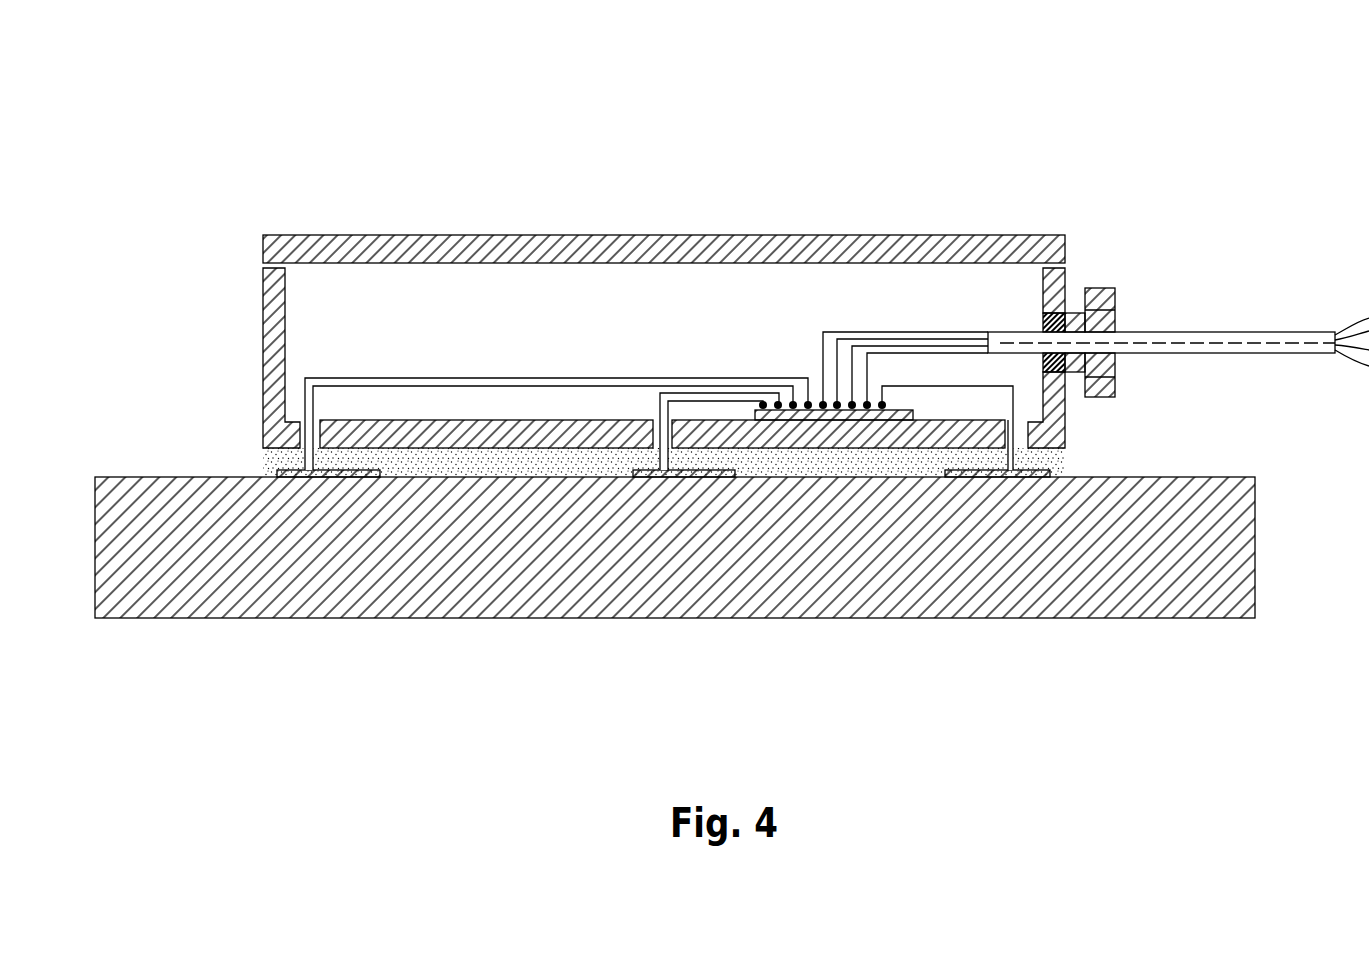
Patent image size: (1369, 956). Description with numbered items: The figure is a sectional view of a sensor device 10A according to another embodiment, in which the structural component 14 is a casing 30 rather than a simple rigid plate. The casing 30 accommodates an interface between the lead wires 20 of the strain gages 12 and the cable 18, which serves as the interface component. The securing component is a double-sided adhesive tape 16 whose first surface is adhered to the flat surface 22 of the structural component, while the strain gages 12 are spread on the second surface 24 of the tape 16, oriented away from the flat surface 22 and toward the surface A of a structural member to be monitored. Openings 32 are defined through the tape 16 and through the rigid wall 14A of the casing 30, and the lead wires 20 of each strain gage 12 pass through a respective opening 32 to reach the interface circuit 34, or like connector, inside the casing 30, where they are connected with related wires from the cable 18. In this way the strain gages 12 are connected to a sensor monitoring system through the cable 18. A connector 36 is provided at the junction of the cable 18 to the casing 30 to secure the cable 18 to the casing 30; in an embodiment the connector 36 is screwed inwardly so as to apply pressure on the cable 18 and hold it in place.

The sensor device 10A is at (252, 172).
The strain gages 12 is at (333, 477).
The structural component 14 is at (525, 294).
The rigid wall 14A is at (487, 426).
The double-sided adhesive tape 16 is at (228, 446).
The cable 18 is at (1193, 332).
The lead wires 20 is at (368, 385).
The flat surface 22 is at (565, 450).
The second surface 24 is at (482, 477).
The casing 30 is at (742, 231).
The openings 32 is at (303, 430).
The interface circuit 34 is at (905, 408).
The connector 36 is at (1100, 288).
The mounting surface A is at (138, 476).